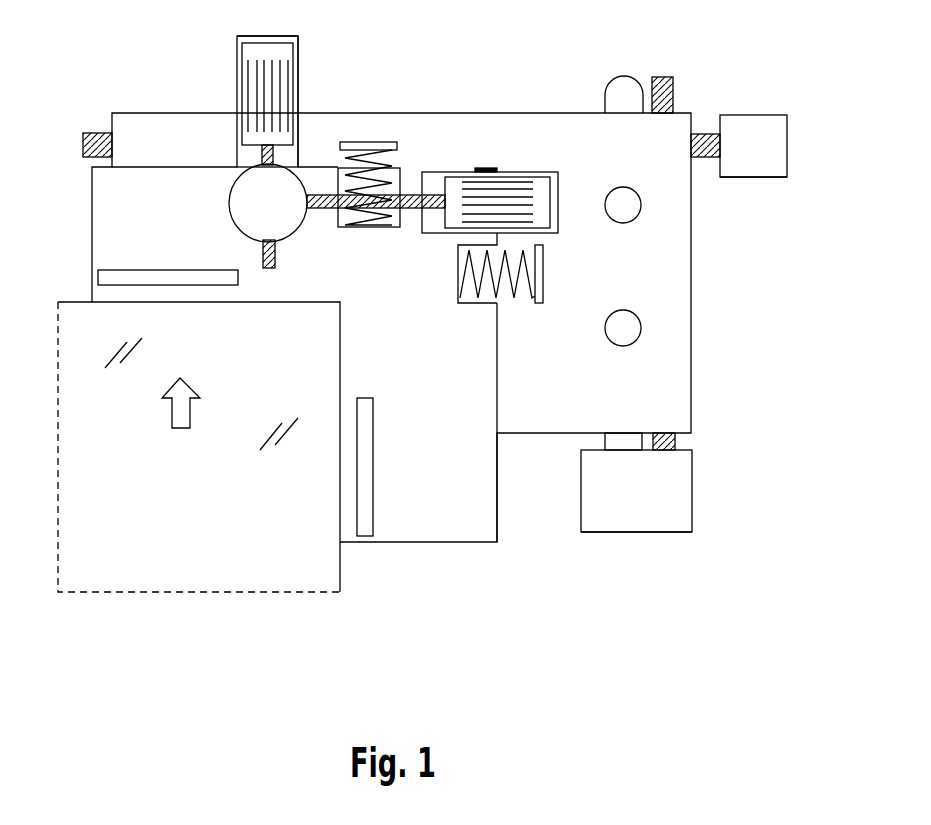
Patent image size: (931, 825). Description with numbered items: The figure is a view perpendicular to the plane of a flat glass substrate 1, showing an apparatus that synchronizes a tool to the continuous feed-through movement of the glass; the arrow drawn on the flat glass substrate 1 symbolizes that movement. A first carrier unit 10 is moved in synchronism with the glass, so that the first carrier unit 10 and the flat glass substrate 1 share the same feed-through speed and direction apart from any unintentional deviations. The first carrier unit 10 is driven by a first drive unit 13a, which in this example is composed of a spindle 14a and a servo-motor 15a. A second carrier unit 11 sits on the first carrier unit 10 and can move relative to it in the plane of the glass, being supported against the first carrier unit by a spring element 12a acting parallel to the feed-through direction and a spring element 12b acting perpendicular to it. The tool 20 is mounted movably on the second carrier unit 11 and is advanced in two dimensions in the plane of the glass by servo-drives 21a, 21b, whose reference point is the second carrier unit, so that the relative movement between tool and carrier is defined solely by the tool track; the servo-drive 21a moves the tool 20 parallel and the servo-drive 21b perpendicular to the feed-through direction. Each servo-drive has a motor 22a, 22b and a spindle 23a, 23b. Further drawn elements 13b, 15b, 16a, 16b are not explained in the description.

The flat glass substrate 1 is at (118, 572).
The first carrier unit 10 is at (678, 371).
The second carrier unit 11 is at (441, 525).
The spring element 12a is at (385, 142).
The spring element 12b is at (542, 272).
The first drive unit 13a is at (643, 533).
The second actuating direction 13b is at (743, 178).
The spindle 14a is at (661, 77).
The servo-motor 15a is at (680, 473).
The second actuating element 15b is at (745, 115).
The first sensor plate 16a is at (173, 278).
The second sensor plate 16b is at (360, 484).
The tool 20 is at (240, 208).
The servo-drive 21a is at (297, 98).
The servo-drive 21b is at (477, 171).
The motor 22a is at (288, 52).
The motor 22b is at (538, 186).
The spindle 23a is at (262, 155).
The spindle 23b is at (407, 194).